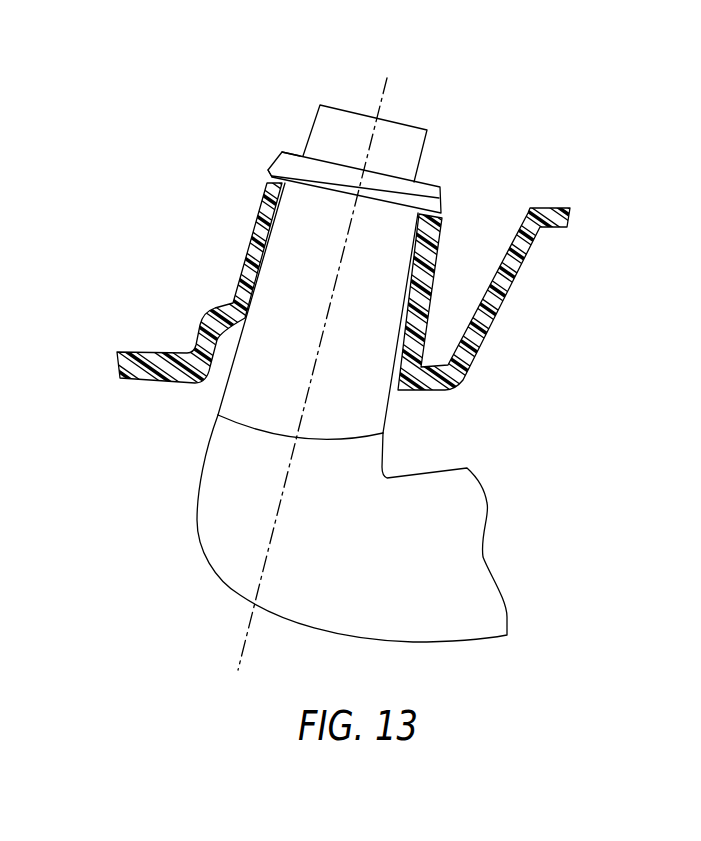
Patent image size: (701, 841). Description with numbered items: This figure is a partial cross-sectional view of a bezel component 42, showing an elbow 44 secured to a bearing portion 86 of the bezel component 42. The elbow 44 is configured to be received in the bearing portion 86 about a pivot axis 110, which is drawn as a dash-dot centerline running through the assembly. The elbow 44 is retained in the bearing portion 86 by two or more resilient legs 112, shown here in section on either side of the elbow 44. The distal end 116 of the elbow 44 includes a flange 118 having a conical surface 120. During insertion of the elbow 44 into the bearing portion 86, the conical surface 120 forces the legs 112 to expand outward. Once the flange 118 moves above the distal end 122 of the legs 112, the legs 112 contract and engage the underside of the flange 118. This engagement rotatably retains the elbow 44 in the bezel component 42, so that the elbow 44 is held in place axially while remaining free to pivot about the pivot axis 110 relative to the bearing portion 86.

The bezel component 42 is at (119, 314).
The elbow 44 is at (201, 572).
The bearing portion 86 is at (236, 278).
The pivot axis 110 is at (382, 107).
The resilient legs 112 is at (263, 213).
The distal end 116 is at (424, 128).
The flange 118 is at (281, 166).
The conical surface 120 is at (441, 192).
The distal end 122 is at (271, 174).